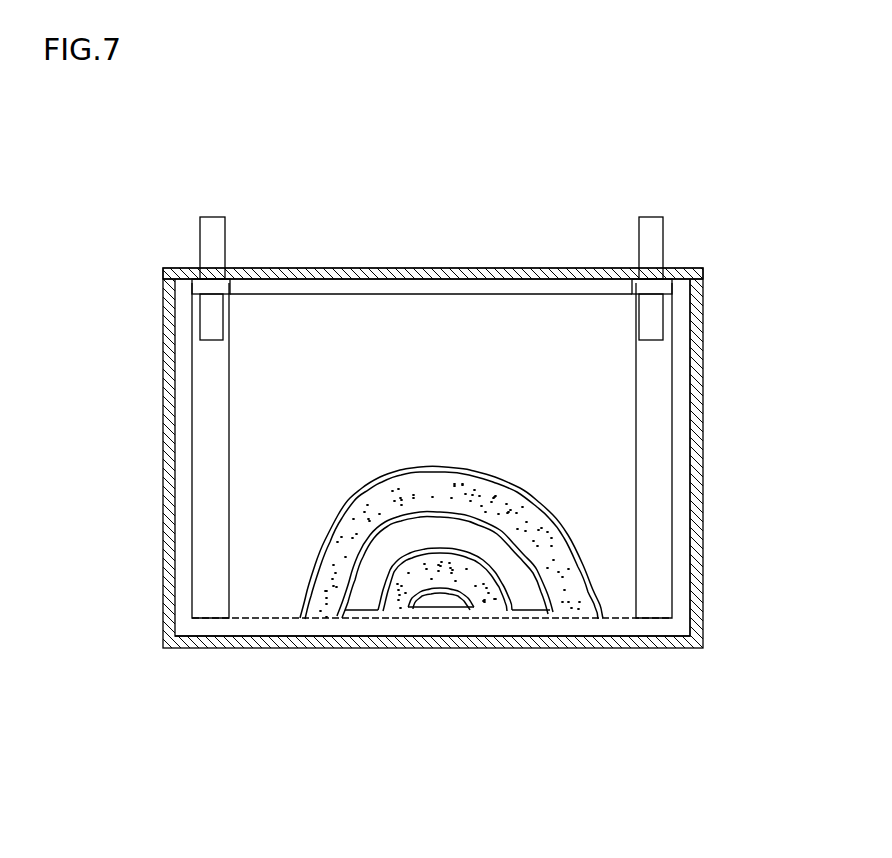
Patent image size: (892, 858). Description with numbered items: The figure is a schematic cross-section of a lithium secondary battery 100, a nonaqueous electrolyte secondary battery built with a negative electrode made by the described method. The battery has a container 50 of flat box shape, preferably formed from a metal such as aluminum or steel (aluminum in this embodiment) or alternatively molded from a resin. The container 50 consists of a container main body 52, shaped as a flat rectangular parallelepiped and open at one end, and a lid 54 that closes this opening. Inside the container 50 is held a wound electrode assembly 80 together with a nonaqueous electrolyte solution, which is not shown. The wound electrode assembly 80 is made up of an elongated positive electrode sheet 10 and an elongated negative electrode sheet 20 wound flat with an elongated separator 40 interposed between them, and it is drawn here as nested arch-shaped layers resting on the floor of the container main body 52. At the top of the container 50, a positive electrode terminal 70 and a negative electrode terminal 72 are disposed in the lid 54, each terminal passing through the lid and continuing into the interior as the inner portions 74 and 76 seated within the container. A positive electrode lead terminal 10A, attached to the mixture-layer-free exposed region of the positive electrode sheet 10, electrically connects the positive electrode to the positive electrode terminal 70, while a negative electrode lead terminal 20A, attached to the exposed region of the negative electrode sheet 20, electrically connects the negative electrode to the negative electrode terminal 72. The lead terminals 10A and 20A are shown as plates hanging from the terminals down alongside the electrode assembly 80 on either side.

The lithium secondary battery 100 is at (697, 148).
The container 50 is at (703, 452).
The container main body 52 is at (703, 592).
The lid 54 is at (320, 268).
The positive electrode terminal 70 is at (212, 227).
The negative electrode terminal 72 is at (650, 232).
The positive terminal inner portion 74 is at (203, 332).
The negative terminal inner portion 76 is at (655, 328).
The positive electrode lead terminal 10A is at (207, 515).
The negative electrode lead terminal 20A is at (660, 537).
The positive electrode sheet 10 is at (317, 610).
The negative electrode sheet 20 is at (400, 597).
The separator 40 is at (263, 597).
The wound electrode assembly 80 is at (610, 622).